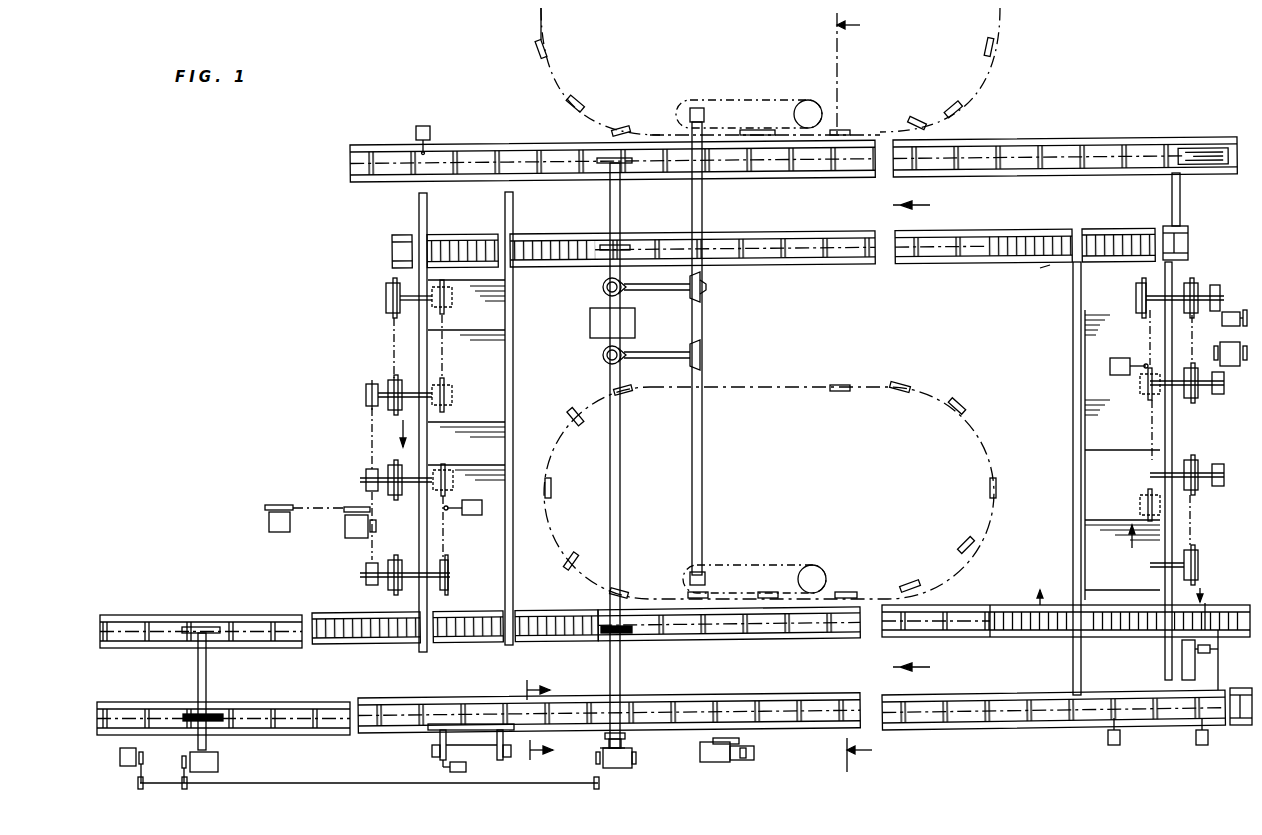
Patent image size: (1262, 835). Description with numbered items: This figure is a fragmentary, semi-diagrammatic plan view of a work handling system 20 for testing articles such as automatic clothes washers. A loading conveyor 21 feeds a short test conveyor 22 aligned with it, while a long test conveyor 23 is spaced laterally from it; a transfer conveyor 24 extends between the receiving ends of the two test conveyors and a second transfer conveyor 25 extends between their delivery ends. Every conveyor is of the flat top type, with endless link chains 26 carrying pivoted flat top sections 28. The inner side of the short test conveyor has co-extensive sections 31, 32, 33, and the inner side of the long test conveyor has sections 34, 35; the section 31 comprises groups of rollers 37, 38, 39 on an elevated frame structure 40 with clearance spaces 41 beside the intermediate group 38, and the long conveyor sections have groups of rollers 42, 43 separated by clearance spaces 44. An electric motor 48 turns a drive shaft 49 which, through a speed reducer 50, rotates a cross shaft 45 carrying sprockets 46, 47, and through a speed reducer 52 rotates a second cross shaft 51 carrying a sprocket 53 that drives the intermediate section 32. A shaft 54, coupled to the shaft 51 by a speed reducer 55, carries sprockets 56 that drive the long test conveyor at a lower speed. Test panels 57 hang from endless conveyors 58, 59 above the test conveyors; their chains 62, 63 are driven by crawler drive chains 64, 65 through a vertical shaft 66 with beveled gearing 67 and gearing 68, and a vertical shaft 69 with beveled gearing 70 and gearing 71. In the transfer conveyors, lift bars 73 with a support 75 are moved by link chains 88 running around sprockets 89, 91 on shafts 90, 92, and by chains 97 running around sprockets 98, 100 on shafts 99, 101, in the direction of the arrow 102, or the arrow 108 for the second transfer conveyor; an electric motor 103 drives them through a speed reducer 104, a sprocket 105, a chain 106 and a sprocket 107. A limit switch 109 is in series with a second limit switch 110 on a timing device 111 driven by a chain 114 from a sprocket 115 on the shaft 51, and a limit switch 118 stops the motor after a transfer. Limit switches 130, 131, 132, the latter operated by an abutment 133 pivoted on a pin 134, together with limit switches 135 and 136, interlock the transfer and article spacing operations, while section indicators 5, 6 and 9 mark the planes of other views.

The section line 5 is at (1121, 599).
The section line 6 is at (541, 715).
The section line 9 is at (863, 392).
The work handling system 20 is at (1078, 138).
The loading conveyor 21 is at (1242, 605).
The short test conveyor 22 is at (832, 695).
The long test conveyor 23 is at (860, 180).
The transfer conveyor 24 is at (1070, 505).
The second transfer conveyor 25 is at (387, 356).
The endless link type chains 26 is at (532, 160).
The flat top sections 28 is at (972, 695).
The section 31 is at (1150, 638).
The intermediate section 32 is at (758, 640).
The section 33 is at (475, 644).
The section 34 is at (1045, 265).
The intermediate section 35 is at (853, 268).
The group of rollers 37 is at (540, 620).
The intermediate group of rollers 38 is at (462, 620).
The group of rollers 39 is at (378, 645).
The elevated frame structure 40 is at (415, 645).
The clearance spaces 41 is at (430, 645).
The group of rollers 42 is at (455, 245).
The group of rollers 43 is at (1025, 240).
The clearance spaces 44 is at (510, 232).
The cross shaft 45 is at (207, 685).
The sprocket 46 is at (218, 627).
The sprocket 47 is at (225, 714).
The electric motor 48 is at (120, 757).
The drive shaft 49 is at (318, 782).
The speed reducer 50 is at (220, 760).
The second cross shaft 51 is at (620, 560).
The speed reducer 52 is at (634, 762).
The sprocket 53 is at (628, 636).
The shaft 54 is at (621, 200).
The speed reducer 55 is at (636, 322).
The sprockets 56 is at (604, 165).
The test panels 57 is at (580, 104).
The endless conveyor 58 is at (830, 386).
The endless conveyor 59 is at (542, 31).
The link type chain 62 is at (990, 515).
The link type chain 63 is at (948, 112).
The crawler type drive chain 64 is at (742, 566).
The crawler type drive chain 65 is at (730, 100).
The vertical shaft 66 is at (603, 355).
The beveled gearing 67 is at (606, 362).
The shafts and gearing 68 is at (702, 356).
The vertical shaft 69 is at (603, 288).
The beveled gearing 70 is at (628, 284).
The shafting and gearing 71 is at (708, 289).
The lift bars 73 is at (428, 240).
The support 75 is at (418, 282).
The link chains 88 is at (393, 335).
The sprockets 89 is at (386, 297).
The shaft 90 is at (402, 305).
The sprockets 91 is at (448, 388).
The shaft 92 is at (397, 380).
The chains 97 is at (395, 548).
The sprockets 98 is at (1152, 400).
The shaft 99 is at (1162, 398).
The sprockets 100 is at (450, 578).
The shaft 101 is at (428, 585).
The arrow 102 is at (1130, 540).
The electric motor 103 is at (276, 532).
The speed reducer 104 is at (345, 524).
The sprocket 105 is at (366, 482).
The chain 106 is at (1212, 462).
The sprocket 107 is at (366, 395).
The arrow 108 is at (400, 430).
The limit switch 109 is at (1120, 740).
The second limit switch 110 is at (756, 750).
The timing device 111 is at (705, 762).
The chain 114 is at (640, 730).
The sprocket 115 is at (605, 736).
The limit switch 118 is at (1115, 375).
The limit switch 130 is at (1208, 650).
The limit switch 131 is at (431, 132).
The limit switch 132 is at (442, 766).
The abutment 133 is at (468, 724).
The pin 134 is at (505, 755).
The limit switch 135 is at (470, 500).
The limit switch 136 is at (1202, 745).